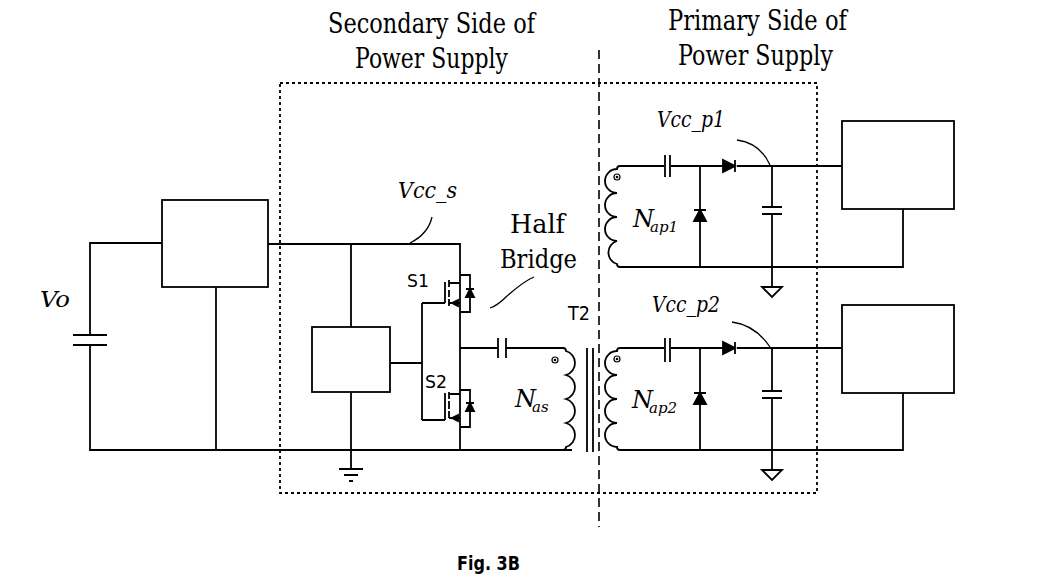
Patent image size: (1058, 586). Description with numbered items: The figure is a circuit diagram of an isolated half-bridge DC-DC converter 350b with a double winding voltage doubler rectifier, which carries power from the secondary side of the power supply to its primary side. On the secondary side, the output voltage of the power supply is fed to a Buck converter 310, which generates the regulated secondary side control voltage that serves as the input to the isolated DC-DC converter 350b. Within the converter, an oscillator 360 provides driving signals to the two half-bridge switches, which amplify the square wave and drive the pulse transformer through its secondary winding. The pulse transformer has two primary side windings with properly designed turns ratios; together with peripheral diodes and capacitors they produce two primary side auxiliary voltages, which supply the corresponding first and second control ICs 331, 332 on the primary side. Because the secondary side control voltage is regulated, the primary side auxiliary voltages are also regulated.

The buck converter 310 is at (162, 218).
The isolated DC-DC converter 350b is at (280, 106).
The oscillator 360 is at (333, 325).
The control IC 331 is at (873, 120).
The control IC 332 is at (917, 303).